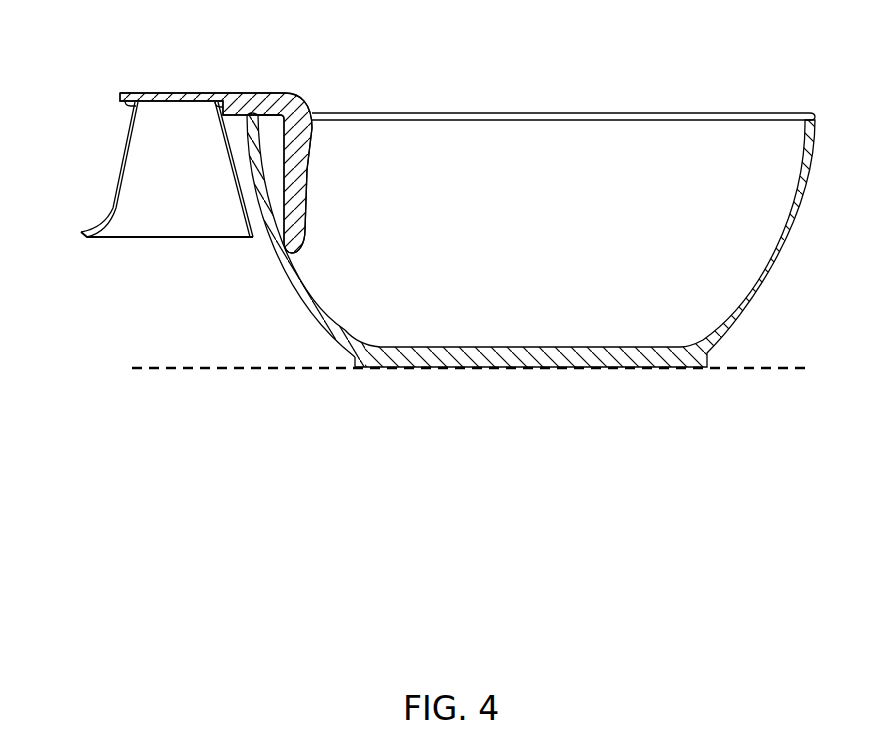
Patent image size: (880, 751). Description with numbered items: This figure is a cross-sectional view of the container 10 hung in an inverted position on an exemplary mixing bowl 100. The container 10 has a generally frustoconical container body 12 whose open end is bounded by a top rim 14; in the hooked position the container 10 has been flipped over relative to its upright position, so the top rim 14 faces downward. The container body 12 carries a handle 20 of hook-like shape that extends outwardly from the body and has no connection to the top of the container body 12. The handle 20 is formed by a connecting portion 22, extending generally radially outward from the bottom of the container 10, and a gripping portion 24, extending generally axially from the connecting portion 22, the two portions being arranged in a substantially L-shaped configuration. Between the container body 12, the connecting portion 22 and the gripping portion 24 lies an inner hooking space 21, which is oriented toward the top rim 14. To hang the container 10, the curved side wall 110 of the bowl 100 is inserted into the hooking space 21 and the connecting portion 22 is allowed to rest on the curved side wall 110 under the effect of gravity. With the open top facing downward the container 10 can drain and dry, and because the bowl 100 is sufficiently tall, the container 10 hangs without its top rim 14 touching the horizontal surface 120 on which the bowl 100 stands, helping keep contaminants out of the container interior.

The container 10 is at (143, 203).
The container body 12 is at (116, 181).
The top rim 14 is at (137, 238).
The handle 20 is at (269, 135).
The inner hooking space 21 is at (273, 162).
The connecting portion 22 is at (240, 92).
The gripping portion 24 is at (312, 184).
The mixing bowl 100 is at (515, 219).
The curved side wall 110 is at (284, 272).
The horizontal surface 120 is at (157, 366).